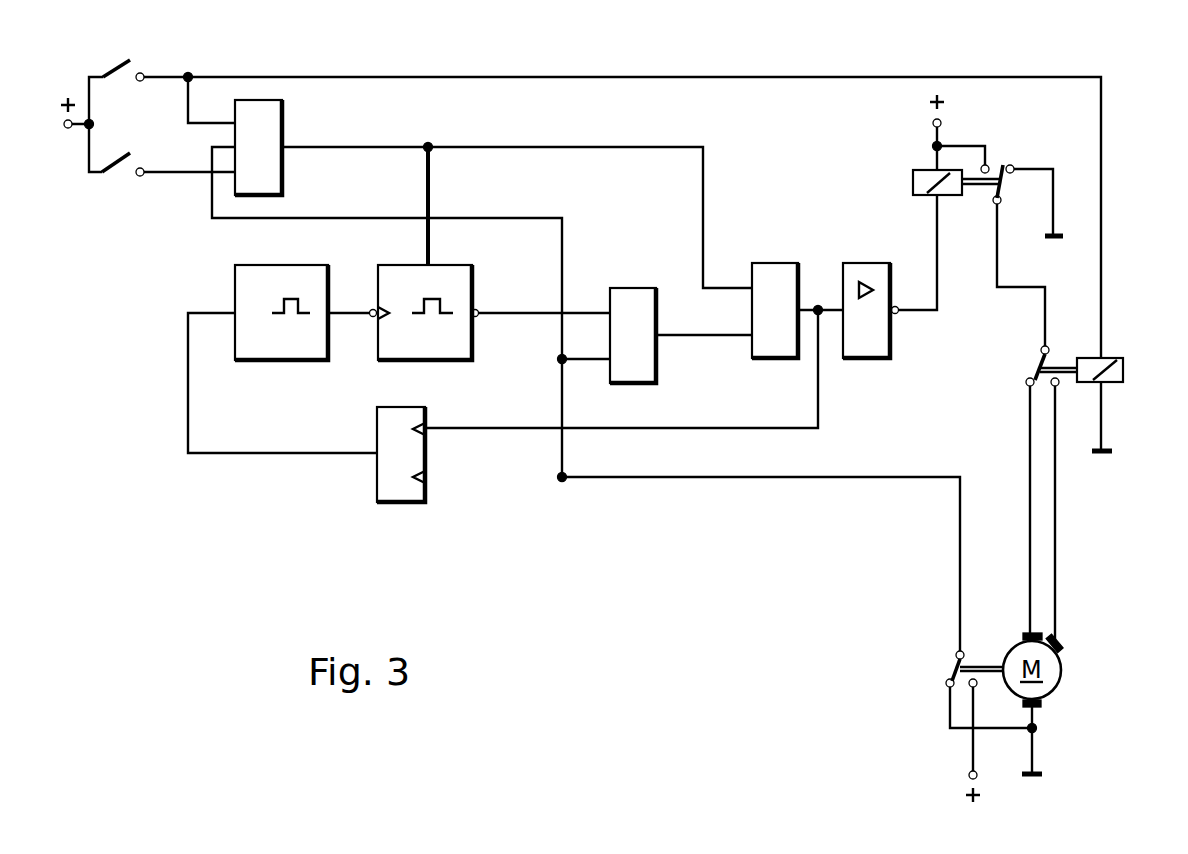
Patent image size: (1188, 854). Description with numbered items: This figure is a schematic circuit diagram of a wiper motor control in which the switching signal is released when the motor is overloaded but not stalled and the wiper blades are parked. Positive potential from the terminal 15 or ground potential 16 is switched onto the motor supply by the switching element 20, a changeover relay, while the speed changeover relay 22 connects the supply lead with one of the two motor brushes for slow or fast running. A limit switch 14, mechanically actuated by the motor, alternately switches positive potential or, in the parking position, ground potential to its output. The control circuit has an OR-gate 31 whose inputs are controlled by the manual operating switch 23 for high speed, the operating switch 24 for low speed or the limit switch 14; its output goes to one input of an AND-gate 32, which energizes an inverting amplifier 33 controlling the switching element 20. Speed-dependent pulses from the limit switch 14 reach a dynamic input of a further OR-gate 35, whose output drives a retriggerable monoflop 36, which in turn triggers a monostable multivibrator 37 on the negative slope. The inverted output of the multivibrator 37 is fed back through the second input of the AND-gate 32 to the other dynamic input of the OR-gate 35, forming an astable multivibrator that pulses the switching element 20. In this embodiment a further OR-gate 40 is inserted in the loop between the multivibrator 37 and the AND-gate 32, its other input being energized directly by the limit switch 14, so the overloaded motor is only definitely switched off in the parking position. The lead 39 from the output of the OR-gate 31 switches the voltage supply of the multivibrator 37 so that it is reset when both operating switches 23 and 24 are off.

The limit switch 14 is at (920, 660).
The positive terminal 15 is at (68, 128).
The ground potential 16 is at (1055, 187).
The switching element 20 is at (952, 187).
The speed changeover relay 22 is at (1115, 373).
The manual operating switch for high speed 23 is at (118, 57).
The operating switch for low speed 24 is at (127, 139).
The OR-gate 31 is at (280, 132).
The AND-gate 32 is at (778, 272).
The inverting amplifier 33 is at (872, 347).
The further OR-gate 35 is at (408, 502).
The monoflop 36 is at (292, 280).
The monostable multivibrator 37 is at (463, 278).
The lead 39 is at (428, 195).
The further OR-gate 40 is at (637, 363).